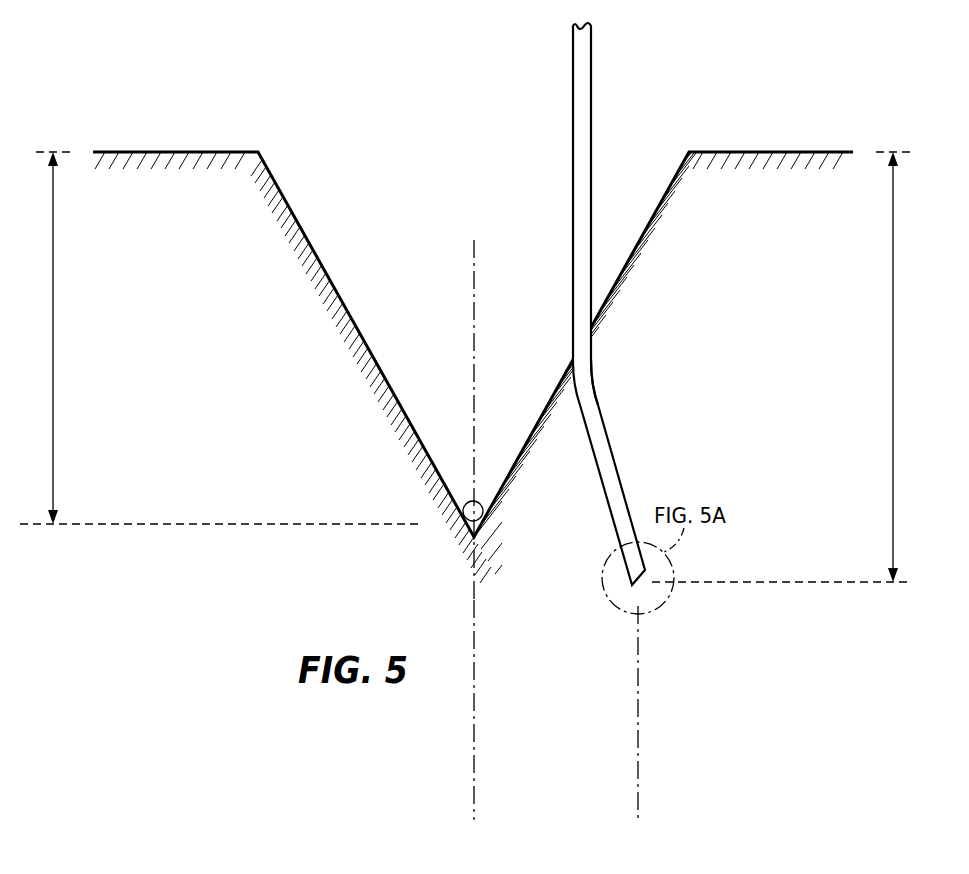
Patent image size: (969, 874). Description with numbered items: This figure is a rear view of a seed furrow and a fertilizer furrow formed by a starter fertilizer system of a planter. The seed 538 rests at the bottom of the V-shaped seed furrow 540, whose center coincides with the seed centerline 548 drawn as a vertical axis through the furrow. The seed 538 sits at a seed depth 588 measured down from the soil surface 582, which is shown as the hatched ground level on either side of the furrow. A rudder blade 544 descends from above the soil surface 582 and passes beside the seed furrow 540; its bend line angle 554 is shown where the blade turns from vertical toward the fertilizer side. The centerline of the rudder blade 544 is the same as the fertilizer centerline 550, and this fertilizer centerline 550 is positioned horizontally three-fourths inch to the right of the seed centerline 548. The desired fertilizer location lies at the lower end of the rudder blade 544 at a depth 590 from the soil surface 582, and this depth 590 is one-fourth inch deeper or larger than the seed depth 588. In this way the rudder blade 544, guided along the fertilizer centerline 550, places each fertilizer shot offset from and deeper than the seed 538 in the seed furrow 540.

The seed 538 is at (466, 513).
The seed furrow 540 is at (474, 311).
The rudder blade 544 is at (580, 108).
The seed centerline 548 is at (474, 720).
The fertilizer centerline 550 is at (638, 720).
The bend line angle 554 is at (600, 372).
The soil surface 582 is at (751, 146).
The seed depth 588 is at (221, 338).
The depth 590 is at (781, 367).